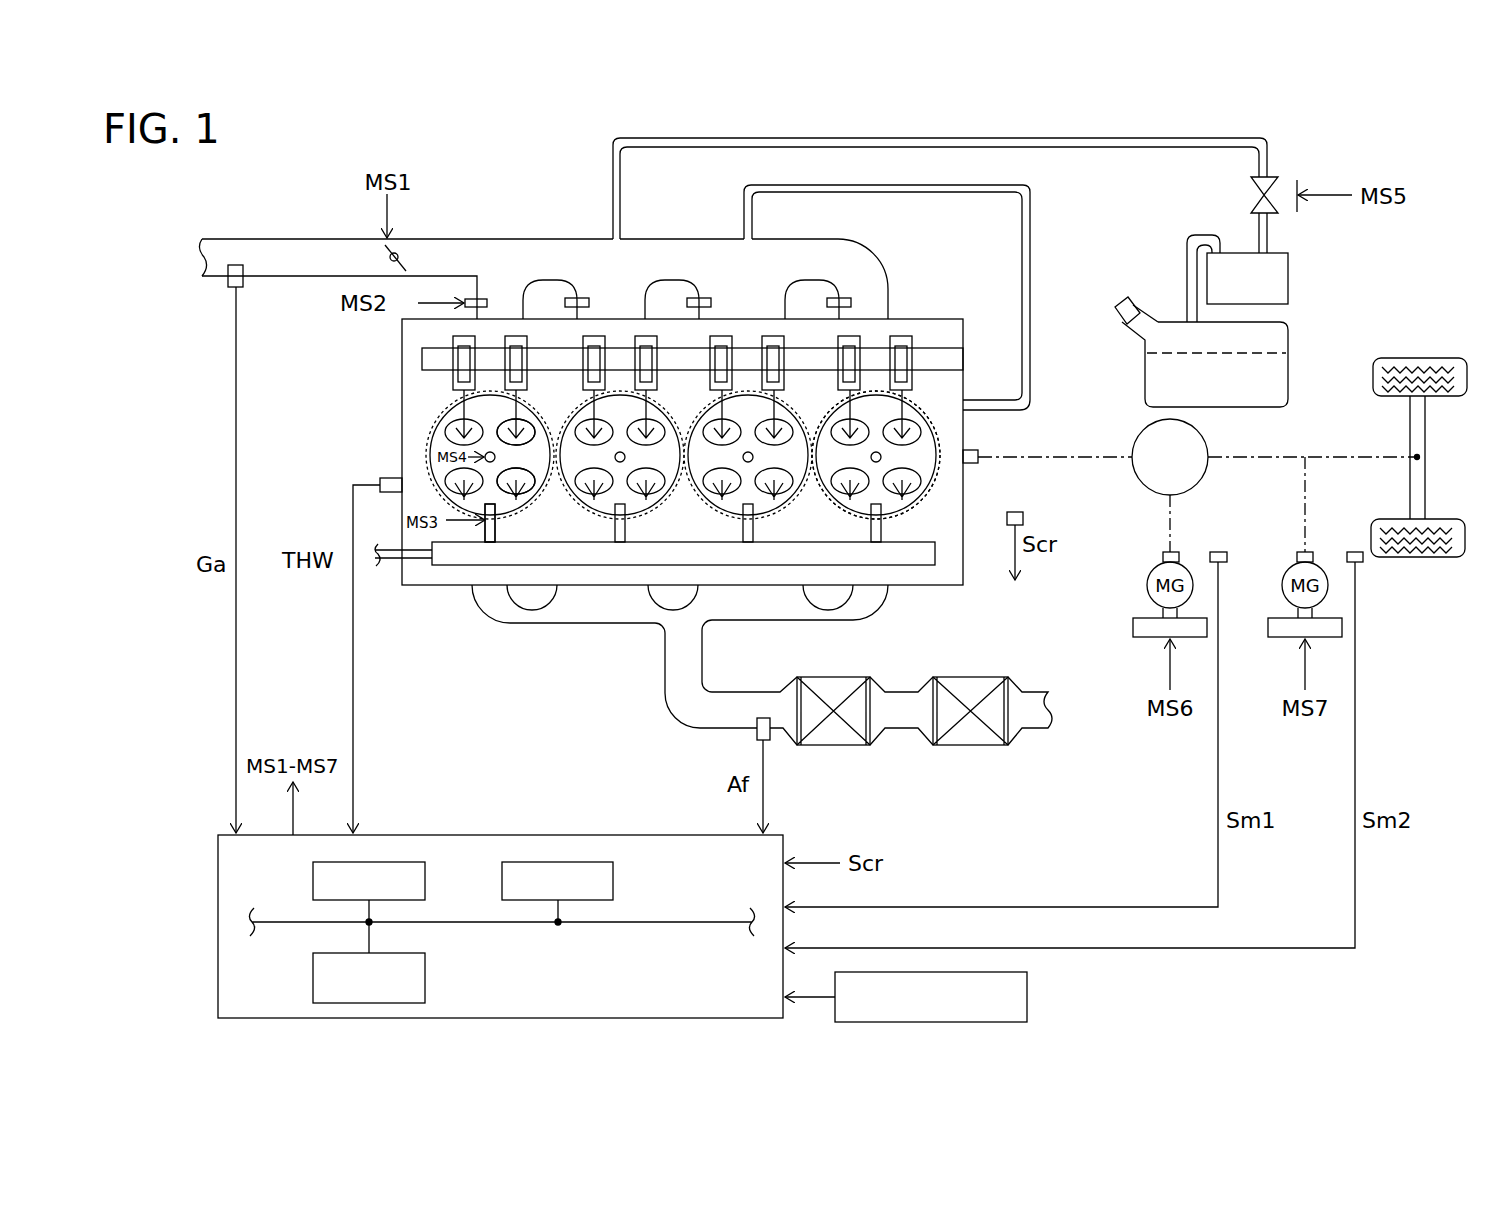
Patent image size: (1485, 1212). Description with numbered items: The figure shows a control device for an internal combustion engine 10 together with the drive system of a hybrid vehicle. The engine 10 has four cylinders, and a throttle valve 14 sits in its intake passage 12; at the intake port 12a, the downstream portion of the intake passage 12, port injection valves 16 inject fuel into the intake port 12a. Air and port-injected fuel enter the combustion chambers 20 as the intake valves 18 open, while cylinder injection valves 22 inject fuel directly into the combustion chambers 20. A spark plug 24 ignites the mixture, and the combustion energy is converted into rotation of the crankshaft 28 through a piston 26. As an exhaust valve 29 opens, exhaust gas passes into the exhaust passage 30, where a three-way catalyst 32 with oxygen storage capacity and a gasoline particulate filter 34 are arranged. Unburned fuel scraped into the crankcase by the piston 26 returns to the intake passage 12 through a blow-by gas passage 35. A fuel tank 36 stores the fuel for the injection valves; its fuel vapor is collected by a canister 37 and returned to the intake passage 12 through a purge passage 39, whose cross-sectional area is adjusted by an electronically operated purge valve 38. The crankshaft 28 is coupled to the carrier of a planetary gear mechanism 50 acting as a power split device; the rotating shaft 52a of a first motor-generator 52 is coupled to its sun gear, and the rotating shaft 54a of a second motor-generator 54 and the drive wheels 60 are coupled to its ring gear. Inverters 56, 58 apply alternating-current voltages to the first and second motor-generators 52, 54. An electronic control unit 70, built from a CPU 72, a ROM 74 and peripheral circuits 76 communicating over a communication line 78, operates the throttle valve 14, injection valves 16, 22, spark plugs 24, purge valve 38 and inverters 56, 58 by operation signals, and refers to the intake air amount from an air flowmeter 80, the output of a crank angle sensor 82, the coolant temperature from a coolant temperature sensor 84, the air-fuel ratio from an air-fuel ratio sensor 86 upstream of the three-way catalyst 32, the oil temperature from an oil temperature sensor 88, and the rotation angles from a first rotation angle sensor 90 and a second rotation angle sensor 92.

The internal combustion engine 10 is at (966, 298).
The intake passage 12 is at (244, 239).
The intake port 12a is at (862, 245).
The throttle valve 14 is at (406, 261).
The port injection valves 16 is at (815, 300).
The intake valves 18 is at (458, 394).
The combustion chambers 20 is at (440, 442).
The cylinder injection valves 22 is at (496, 516).
The spark plug 24 is at (530, 438).
The piston 26 is at (922, 425).
The crankshaft 28 is at (982, 465).
The exhaust valve 29 is at (531, 496).
The exhaust passage 30 is at (750, 618).
The three-way catalyst 32 is at (835, 677).
The gasoline particulate filter 34 is at (968, 677).
The blow-by gas passage 35 is at (895, 185).
The fuel tank 36 is at (1288, 338).
The canister 37 is at (1290, 280).
The purge valve 38 is at (1250, 200).
The purge passage 39 is at (1122, 148).
The planetary gear mechanism 50 is at (1205, 432).
The first motor-generator 52 is at (1147, 588).
The rotating shaft 52a is at (1160, 557).
The second motor-generator 54 is at (1282, 588).
The rotating shaft 54a is at (1295, 557).
The inverter 56 is at (1133, 627).
The inverter 58 is at (1268, 627).
The drive wheels 60 is at (1420, 558).
The electronic control unit 70 is at (466, 834).
The CPU 72 is at (427, 880).
The ROM 74 is at (615, 880).
The peripheral circuits 76 is at (427, 976).
The communication line 78 is at (712, 916).
The air flowmeter 80 is at (226, 290).
The crank angle sensor 82 is at (1024, 516).
The coolant temperature sensor 84 is at (384, 478).
The air-fuel ratio sensor 86 is at (772, 746).
The oil temperature sensor 88 is at (1030, 1000).
The first rotation angle sensor 90 is at (1216, 552).
The second rotation angle sensor 92 is at (1352, 552).